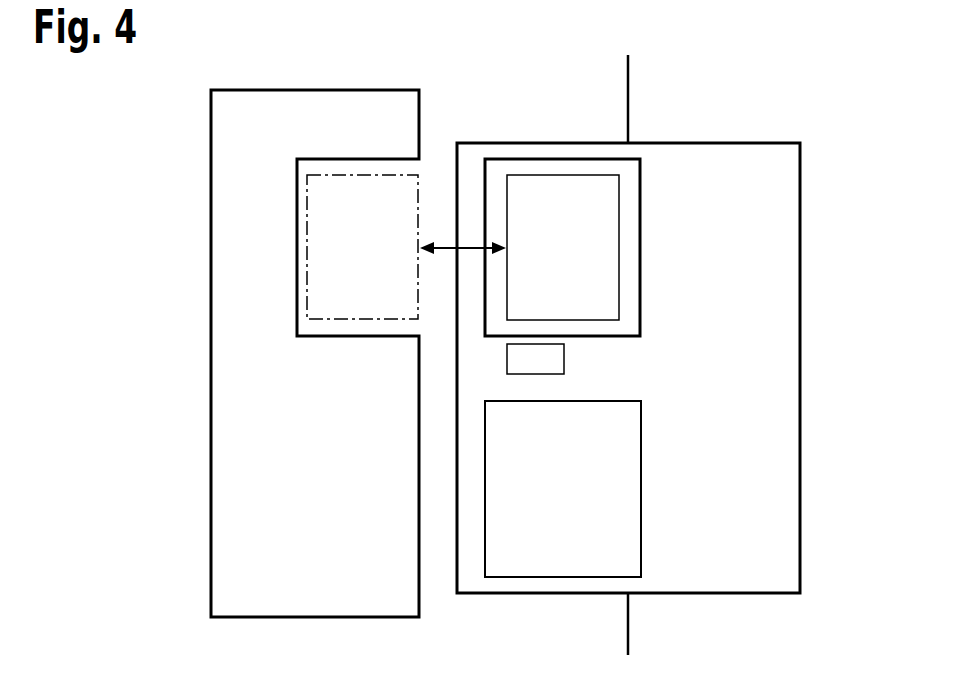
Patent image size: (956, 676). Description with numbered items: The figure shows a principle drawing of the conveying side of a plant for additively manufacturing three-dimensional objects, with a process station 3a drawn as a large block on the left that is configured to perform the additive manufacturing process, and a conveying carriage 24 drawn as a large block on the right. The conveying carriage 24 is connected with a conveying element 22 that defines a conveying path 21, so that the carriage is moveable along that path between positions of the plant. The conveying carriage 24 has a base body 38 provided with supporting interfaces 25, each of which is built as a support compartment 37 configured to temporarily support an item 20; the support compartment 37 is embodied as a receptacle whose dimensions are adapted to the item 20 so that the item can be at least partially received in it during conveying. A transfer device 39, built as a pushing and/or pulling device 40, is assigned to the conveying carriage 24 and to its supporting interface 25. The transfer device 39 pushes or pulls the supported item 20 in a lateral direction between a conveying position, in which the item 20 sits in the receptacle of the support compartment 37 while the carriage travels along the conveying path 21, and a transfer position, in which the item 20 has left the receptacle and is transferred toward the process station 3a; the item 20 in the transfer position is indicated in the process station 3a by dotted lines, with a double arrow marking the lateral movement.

The process station 3a is at (211, 490).
The item 20 is at (395, 165).
The conveying path 21 is at (664, 70).
The conveying element 22 is at (628, 625).
The conveying carriage 24 is at (800, 362).
The supporting interface 25 is at (640, 248).
The support compartment 37 is at (641, 490).
The base body 38 is at (746, 163).
The transfer device 39 is at (634, 361).
The pushing and/or pulling device 40 is at (564, 358).